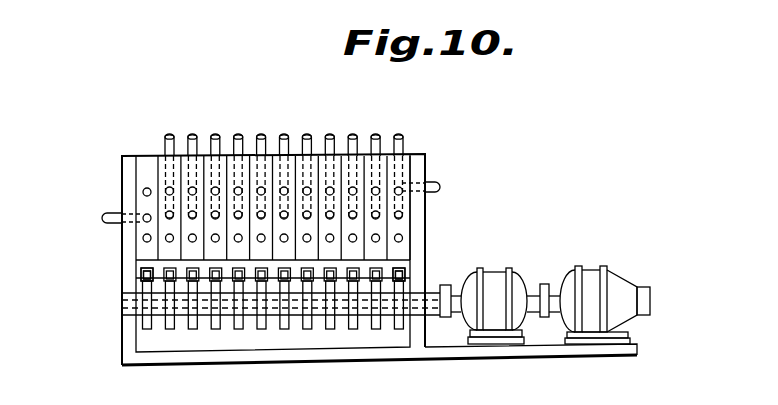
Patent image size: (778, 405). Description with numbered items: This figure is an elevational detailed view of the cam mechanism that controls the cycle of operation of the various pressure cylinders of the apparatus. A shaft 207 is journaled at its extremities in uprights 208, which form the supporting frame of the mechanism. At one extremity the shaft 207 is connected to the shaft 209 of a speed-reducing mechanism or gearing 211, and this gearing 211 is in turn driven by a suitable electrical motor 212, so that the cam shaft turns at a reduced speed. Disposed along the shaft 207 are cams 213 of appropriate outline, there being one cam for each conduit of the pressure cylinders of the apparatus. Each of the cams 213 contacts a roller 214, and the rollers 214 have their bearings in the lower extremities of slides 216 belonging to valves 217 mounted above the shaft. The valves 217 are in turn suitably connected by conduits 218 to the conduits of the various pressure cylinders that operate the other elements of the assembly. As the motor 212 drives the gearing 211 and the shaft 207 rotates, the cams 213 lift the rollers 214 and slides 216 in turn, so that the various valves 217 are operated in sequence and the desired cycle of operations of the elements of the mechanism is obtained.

The shaft 207 is at (165, 302).
The uprights 208 is at (127, 287).
The shaft of speed-reducing mechanism 209 is at (457, 305).
The speed-reducing mechanism 211 is at (510, 273).
The electrical motor 212 is at (617, 287).
The cams 213 is at (287, 322).
The rollers 214 is at (140, 278).
The slides 216 is at (140, 265).
The valves 217 is at (143, 172).
The conduits 218 is at (330, 132).